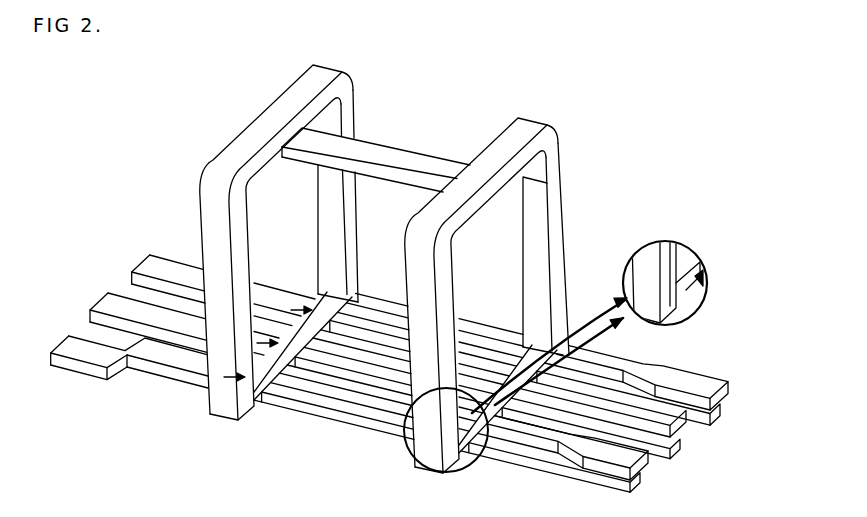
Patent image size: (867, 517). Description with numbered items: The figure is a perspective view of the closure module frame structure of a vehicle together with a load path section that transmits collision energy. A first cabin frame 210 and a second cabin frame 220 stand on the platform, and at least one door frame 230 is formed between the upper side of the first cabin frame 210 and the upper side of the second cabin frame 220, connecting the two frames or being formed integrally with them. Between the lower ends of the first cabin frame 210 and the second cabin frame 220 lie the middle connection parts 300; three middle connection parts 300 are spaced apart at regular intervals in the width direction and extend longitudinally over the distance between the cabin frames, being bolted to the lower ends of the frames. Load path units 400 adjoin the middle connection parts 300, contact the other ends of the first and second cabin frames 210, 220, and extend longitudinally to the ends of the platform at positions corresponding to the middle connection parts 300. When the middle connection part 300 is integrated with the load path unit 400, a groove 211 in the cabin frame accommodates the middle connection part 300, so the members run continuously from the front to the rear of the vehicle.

The first cabin frame 210 is at (490, 150).
The groove 211 is at (707, 296).
The second cabin frame 220 is at (270, 117).
The door frame 230 is at (373, 152).
The middle connection part 300 is at (397, 331).
The load path unit 400 is at (73, 350).